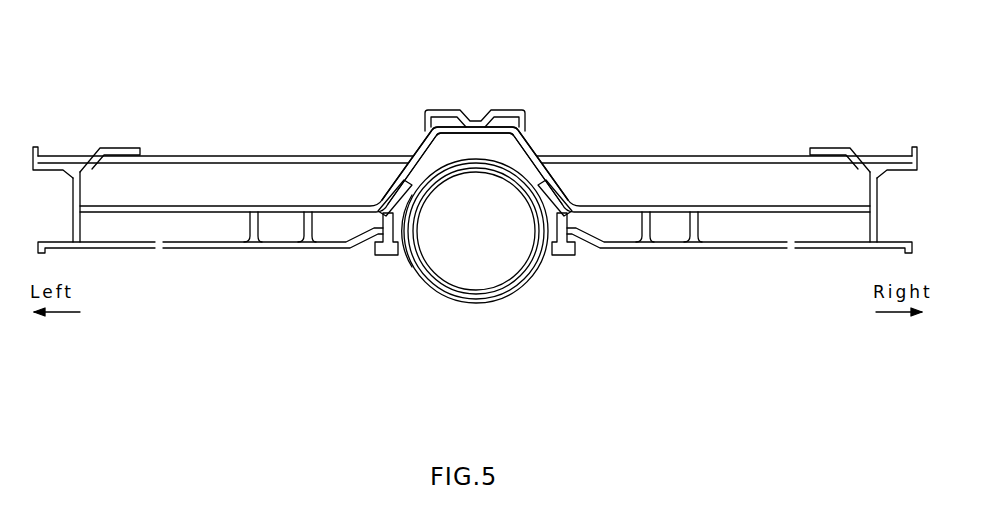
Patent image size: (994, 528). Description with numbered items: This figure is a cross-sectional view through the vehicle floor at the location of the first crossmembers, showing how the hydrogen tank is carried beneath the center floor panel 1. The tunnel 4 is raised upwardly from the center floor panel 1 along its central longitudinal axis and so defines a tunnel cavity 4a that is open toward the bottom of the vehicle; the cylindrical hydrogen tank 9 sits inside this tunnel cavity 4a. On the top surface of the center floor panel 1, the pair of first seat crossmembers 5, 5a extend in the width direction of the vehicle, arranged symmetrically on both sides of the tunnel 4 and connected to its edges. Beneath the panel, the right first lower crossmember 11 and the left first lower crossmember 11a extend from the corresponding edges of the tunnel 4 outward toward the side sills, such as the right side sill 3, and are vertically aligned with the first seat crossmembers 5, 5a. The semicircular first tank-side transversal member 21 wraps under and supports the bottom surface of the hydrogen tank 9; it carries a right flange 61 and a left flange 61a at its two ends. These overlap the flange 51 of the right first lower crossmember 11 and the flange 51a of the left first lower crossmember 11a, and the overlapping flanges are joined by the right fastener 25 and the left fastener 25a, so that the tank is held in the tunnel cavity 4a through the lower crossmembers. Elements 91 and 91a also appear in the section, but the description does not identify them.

The center floor panel 1 is at (123, 206).
The side sill 3 is at (73, 220).
The tunnel 4 is at (534, 152).
The tunnel cavity 4a is at (493, 156).
The first seat crossmember 5 is at (715, 157).
The first seat crossmember 5a is at (183, 156).
The hydrogen tank 9 is at (452, 158).
The first lower crossmember 11 is at (748, 248).
The first lower crossmember 11a is at (199, 248).
The first tank-side transversal member 21 is at (460, 304).
The fastener 25 is at (557, 257).
The fastener 25a is at (380, 257).
The flange 51 is at (542, 186).
The flange 51a is at (402, 186).
The flange 61 is at (552, 200).
The flange 61a is at (409, 223).
The rib 91 is at (640, 228).
The rib 91a is at (248, 232).